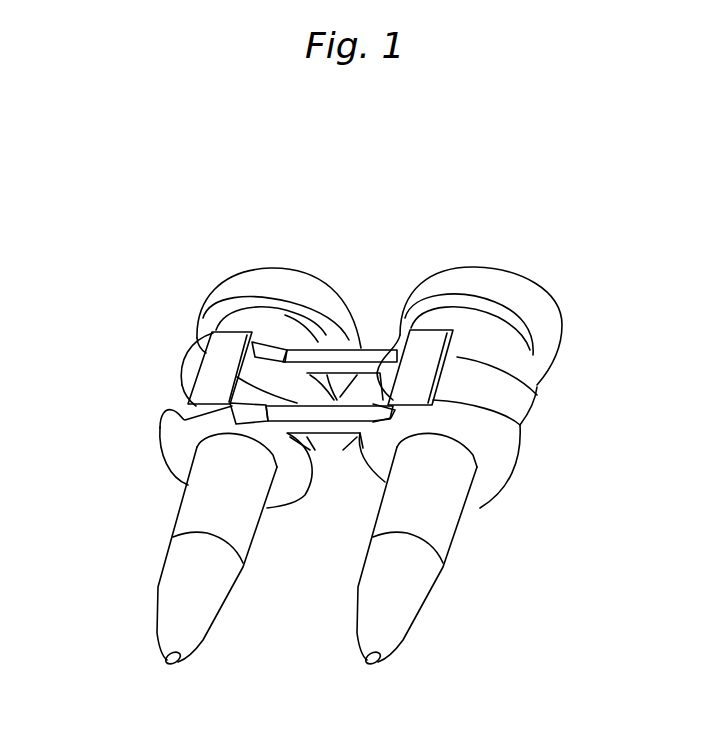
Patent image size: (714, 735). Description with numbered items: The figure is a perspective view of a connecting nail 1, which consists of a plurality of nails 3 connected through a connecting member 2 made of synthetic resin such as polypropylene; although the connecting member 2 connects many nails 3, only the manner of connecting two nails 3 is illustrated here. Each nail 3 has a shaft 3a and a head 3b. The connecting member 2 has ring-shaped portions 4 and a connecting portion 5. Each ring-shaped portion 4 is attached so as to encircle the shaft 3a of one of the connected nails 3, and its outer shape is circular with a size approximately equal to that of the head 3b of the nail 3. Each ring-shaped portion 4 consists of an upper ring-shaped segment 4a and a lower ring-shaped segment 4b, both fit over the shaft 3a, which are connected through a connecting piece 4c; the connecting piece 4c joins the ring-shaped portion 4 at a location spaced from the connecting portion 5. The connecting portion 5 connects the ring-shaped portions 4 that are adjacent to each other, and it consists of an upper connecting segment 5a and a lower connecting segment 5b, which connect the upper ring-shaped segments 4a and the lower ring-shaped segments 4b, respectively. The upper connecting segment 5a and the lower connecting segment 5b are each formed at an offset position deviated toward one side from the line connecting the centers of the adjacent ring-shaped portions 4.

The connecting nail 1 is at (483, 258).
The connecting member 2 is at (530, 430).
The nail 3 is at (331, 549).
The shaft 3a is at (200, 513).
The head 3b is at (220, 292).
The ring-shaped portion 4 is at (283, 419).
The upper ring-shaped segment 4a is at (193, 357).
The lower ring-shaped segment 4b is at (177, 415).
The connecting piece 4c is at (212, 382).
The connecting portion 5 is at (313, 296).
The upper connecting segment 5a is at (355, 350).
The lower connecting segment 5b is at (307, 413).